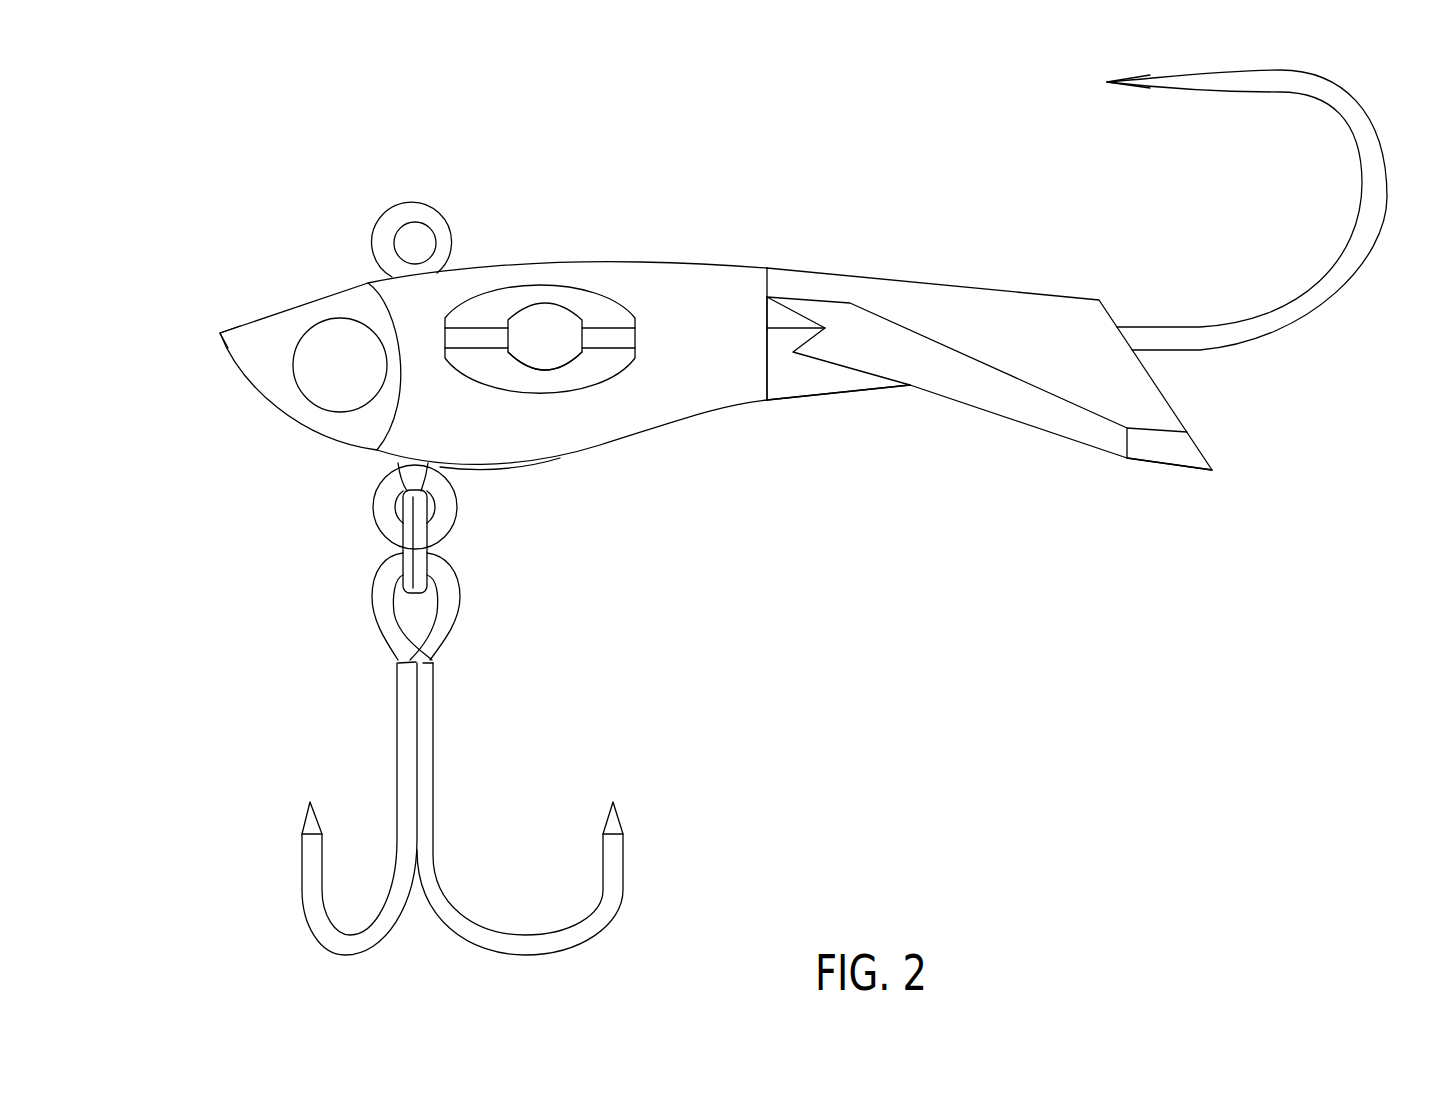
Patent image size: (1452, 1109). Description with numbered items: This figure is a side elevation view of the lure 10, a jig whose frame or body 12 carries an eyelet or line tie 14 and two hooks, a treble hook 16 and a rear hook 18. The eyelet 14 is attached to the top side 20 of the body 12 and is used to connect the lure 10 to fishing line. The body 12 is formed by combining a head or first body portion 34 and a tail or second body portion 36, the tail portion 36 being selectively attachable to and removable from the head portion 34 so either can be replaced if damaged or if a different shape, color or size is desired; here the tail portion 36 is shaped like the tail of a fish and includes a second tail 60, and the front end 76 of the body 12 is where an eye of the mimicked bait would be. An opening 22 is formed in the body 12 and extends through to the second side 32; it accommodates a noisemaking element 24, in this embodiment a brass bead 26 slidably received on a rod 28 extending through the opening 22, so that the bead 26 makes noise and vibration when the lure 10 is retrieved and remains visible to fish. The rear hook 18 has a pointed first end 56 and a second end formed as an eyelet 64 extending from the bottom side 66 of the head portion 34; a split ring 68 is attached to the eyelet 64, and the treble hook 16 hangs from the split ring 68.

The lure 10 is at (263, 158).
The body 12 is at (247, 366).
The eyelet 14 is at (417, 212).
The treble hook 16 is at (397, 740).
The rear hook 18 is at (1388, 193).
The top side 20 is at (703, 174).
The opening 22 is at (506, 299).
The noisemaking element 24 is at (550, 367).
The brass bead 26 is at (580, 357).
The rod 28 is at (592, 338).
The second side 32 is at (687, 380).
The head portion 34 is at (528, 486).
The tail portion 36 is at (1066, 265).
The pointed first end 56 is at (1105, 83).
The second tail 60 is at (1212, 470).
The eyelet 64 is at (374, 500).
The bottom side 66 is at (813, 484).
The split ring 68 is at (403, 547).
The front end 76 is at (184, 332).